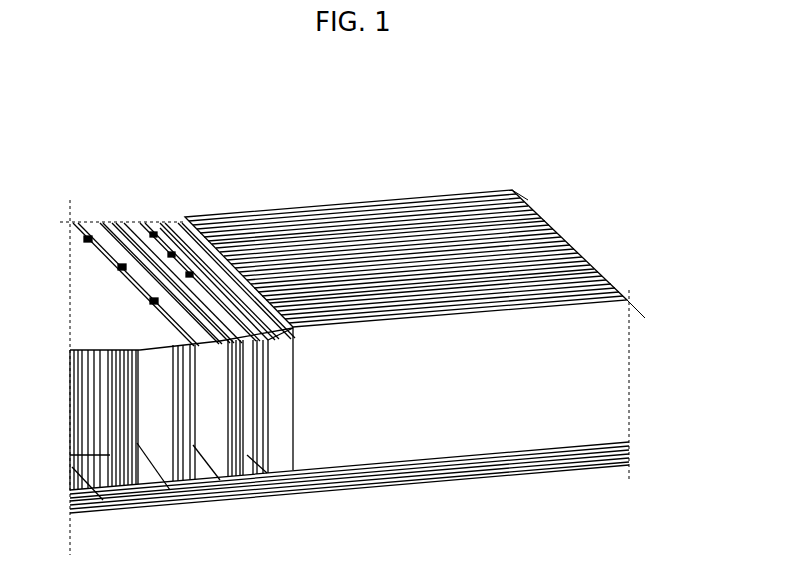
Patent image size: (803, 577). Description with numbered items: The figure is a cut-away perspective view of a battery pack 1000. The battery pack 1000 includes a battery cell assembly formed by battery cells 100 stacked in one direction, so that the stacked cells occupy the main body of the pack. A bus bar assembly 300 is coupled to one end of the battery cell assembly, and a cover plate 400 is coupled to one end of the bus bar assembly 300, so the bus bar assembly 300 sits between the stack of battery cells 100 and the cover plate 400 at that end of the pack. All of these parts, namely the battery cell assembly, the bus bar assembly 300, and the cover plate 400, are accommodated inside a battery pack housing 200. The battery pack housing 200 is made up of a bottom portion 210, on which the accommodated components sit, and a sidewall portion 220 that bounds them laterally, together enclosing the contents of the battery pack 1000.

The battery pack 1000 is at (528, 167).
The battery cells 100 is at (580, 403).
The battery pack housing 200 is at (353, 450).
The bottom portion 210 is at (332, 502).
The sidewall portion 220 is at (198, 508).
The bus bar assembly 300 is at (143, 220).
The cover plate 400 is at (115, 223).